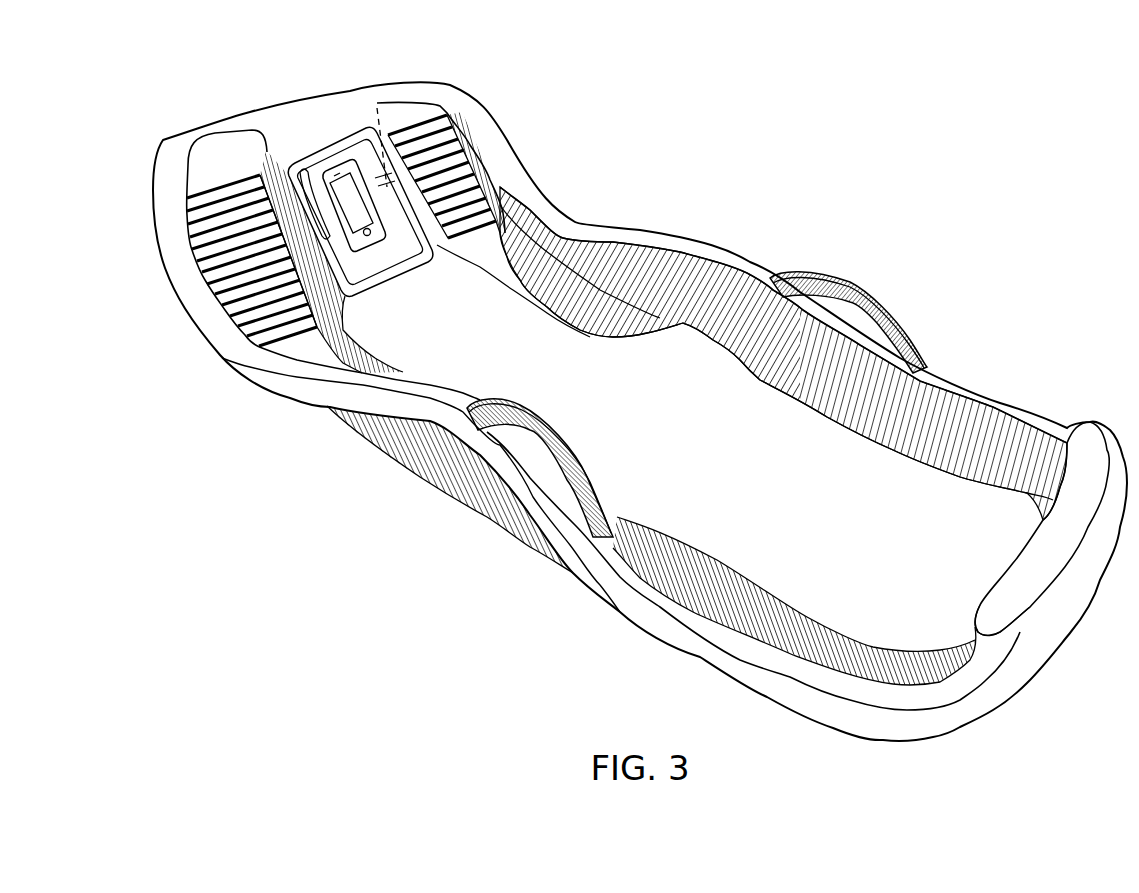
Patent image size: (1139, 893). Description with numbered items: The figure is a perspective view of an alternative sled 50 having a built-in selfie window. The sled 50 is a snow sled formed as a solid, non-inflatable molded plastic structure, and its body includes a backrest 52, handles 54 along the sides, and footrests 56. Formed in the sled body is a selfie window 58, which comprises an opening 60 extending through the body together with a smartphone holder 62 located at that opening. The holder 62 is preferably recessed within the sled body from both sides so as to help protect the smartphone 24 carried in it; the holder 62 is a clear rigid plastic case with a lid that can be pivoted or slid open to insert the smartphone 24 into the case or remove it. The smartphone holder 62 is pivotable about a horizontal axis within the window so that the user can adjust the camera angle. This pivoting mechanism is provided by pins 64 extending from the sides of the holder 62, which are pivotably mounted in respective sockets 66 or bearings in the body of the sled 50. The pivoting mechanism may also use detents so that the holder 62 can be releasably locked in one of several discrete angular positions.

The smartphone 24 is at (358, 215).
The sled 50 is at (463, 490).
The backrest 52 is at (1010, 600).
The handles 54 is at (570, 443).
The footrests 56 is at (255, 294).
The selfie window 58 is at (365, 162).
The opening 60 is at (328, 160).
The smartphone holder 62 is at (355, 165).
The pins 64 is at (320, 237).
The sockets 66 is at (437, 120).